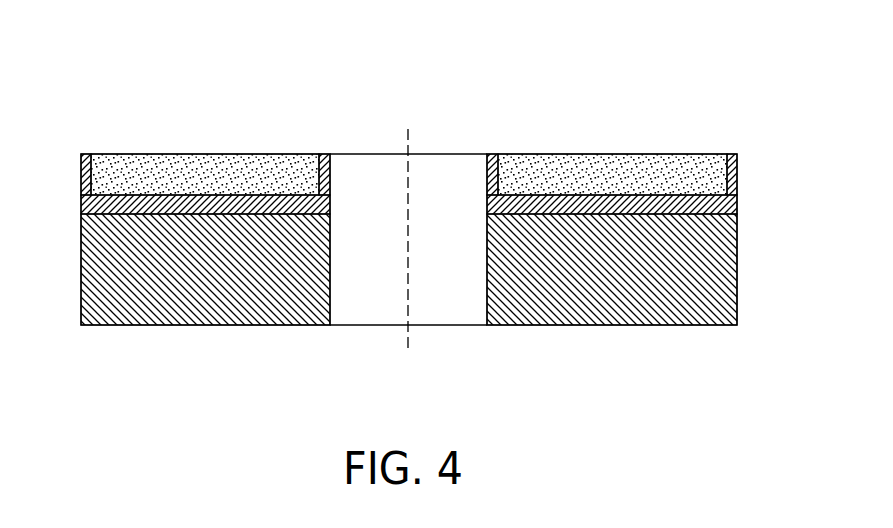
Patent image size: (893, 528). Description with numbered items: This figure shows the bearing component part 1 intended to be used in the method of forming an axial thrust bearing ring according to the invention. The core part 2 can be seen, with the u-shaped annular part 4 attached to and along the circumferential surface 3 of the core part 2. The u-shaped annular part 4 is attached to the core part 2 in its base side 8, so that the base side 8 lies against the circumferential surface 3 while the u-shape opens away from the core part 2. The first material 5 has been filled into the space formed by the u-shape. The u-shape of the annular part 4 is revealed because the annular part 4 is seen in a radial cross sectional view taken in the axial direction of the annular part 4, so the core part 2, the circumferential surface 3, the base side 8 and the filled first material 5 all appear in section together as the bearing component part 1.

The bearing component part 1 is at (213, 84).
The core part 2 is at (96, 275).
The circumferential surface 3 is at (90, 210).
The u-shaped annular part 4 is at (733, 205).
The first material 5 is at (170, 175).
The base side 8 is at (592, 205).